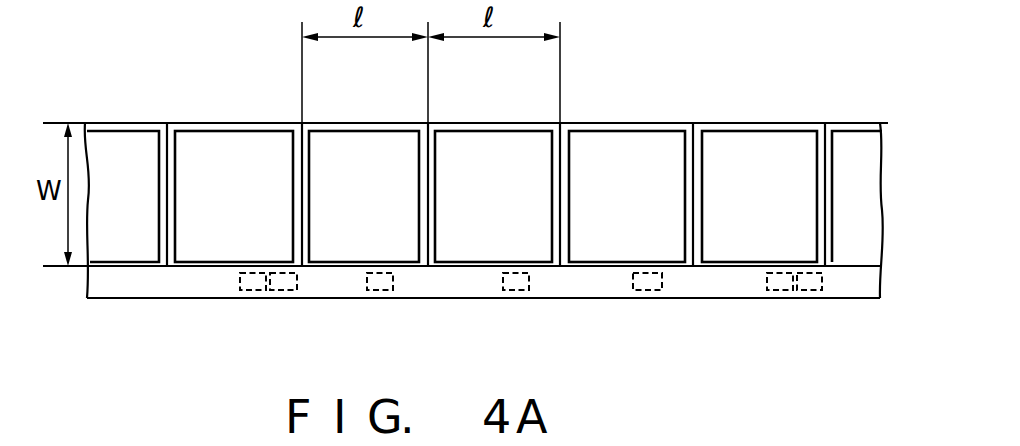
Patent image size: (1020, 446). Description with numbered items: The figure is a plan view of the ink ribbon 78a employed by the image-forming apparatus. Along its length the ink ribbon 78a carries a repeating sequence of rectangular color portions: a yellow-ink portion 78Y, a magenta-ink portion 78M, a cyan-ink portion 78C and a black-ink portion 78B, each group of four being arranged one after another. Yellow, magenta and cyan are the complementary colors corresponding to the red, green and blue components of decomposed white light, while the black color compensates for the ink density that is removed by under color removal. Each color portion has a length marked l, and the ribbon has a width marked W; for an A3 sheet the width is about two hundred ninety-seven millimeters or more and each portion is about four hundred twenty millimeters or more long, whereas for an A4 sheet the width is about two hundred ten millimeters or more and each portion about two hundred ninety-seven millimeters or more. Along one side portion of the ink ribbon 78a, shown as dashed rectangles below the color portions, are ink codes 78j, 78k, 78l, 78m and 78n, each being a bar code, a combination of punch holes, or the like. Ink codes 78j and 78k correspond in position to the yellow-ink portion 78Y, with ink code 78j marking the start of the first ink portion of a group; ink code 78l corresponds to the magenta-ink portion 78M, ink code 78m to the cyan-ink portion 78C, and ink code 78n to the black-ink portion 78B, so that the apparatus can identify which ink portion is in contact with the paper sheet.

The ink ribbon 78a is at (615, 104).
The black-ink portion 78B is at (135, 140).
The yellow-ink portion 78Y is at (255, 136).
The magenta-ink portion 78M is at (382, 137).
The cyan-ink portion 78C is at (517, 137).
The ink code 78j is at (248, 287).
The ink code 78k is at (278, 290).
The ink code 78l is at (381, 290).
The ink code 78m is at (513, 290).
The ink code 78n is at (643, 290).